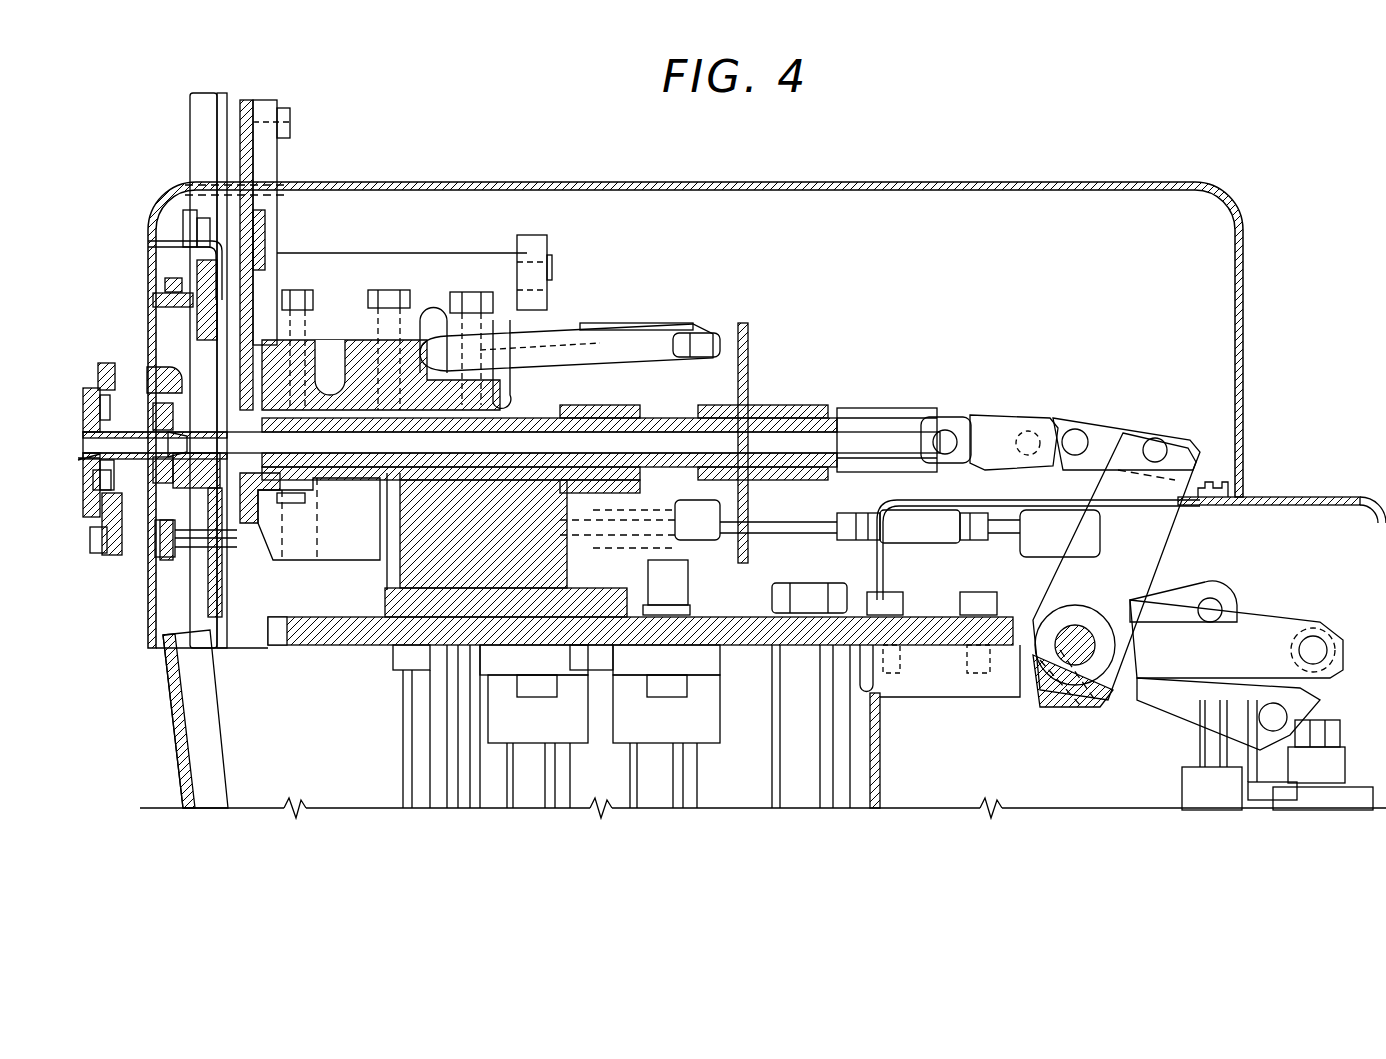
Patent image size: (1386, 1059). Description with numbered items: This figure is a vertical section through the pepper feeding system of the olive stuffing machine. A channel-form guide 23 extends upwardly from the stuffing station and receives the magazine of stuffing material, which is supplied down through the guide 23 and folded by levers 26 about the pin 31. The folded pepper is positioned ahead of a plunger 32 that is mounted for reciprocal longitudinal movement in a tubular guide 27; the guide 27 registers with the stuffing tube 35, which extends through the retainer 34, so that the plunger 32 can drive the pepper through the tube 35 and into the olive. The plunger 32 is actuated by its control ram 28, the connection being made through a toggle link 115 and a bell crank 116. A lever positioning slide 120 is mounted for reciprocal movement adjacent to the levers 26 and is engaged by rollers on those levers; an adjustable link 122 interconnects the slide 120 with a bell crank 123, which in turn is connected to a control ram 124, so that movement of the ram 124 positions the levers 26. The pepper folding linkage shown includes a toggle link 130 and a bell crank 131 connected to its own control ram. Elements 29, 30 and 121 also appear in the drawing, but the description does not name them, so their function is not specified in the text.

The guide 23 is at (232, 158).
The levers 26 is at (650, 332).
The guide 27 is at (338, 410).
The ram 28 is at (1228, 806).
The stop member 29 is at (83, 460).
The base support 30 is at (683, 770).
The pin 31 is at (168, 243).
The plunger 32 is at (880, 442).
The retainer 34 is at (95, 372).
The stuffing tube 35 is at (133, 432).
The toggle link 115 is at (985, 425).
The bell crank 116 is at (1160, 607).
The lever positioning slide 120 is at (748, 355).
The nut 121 is at (700, 342).
The adjustable link 122 is at (905, 550).
The bell crank 123 is at (1282, 628).
The control ram 124 is at (1345, 790).
The toggle link 130 is at (1125, 412).
The bell crank 131 is at (1140, 537).